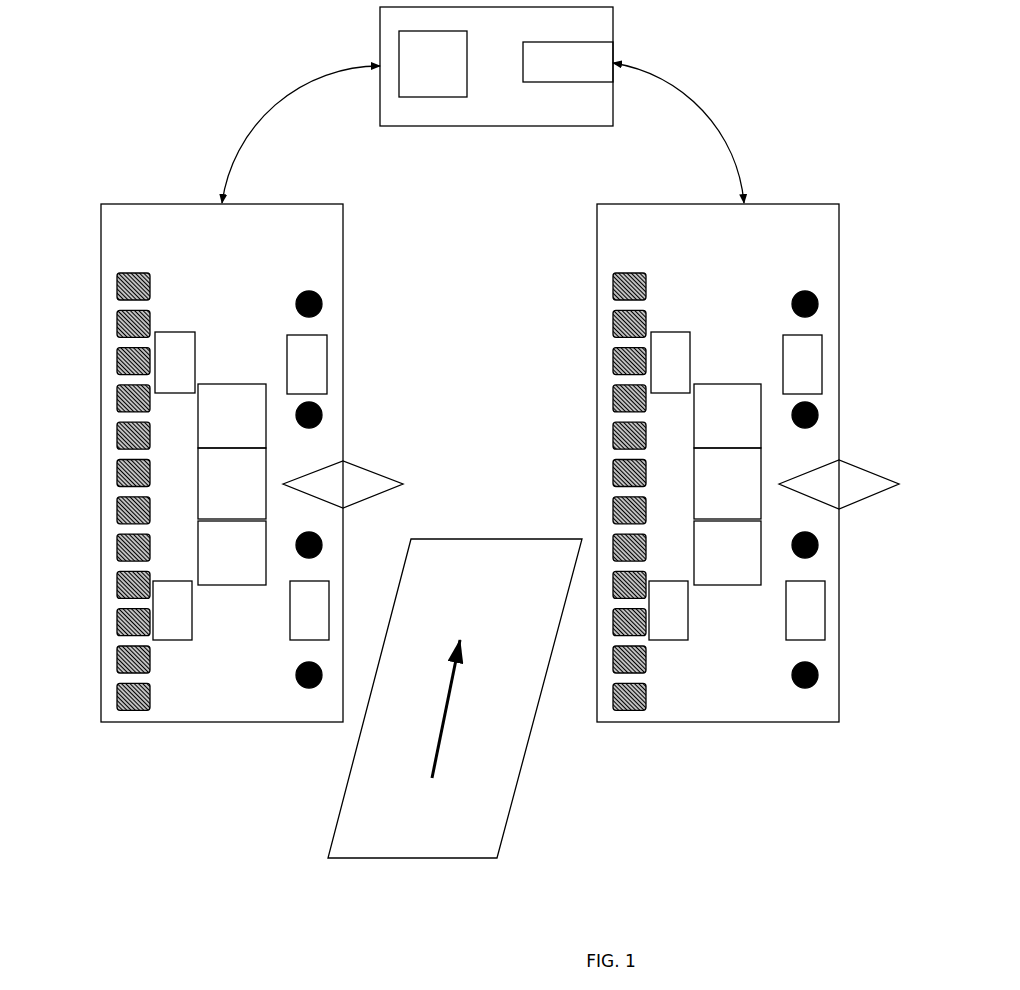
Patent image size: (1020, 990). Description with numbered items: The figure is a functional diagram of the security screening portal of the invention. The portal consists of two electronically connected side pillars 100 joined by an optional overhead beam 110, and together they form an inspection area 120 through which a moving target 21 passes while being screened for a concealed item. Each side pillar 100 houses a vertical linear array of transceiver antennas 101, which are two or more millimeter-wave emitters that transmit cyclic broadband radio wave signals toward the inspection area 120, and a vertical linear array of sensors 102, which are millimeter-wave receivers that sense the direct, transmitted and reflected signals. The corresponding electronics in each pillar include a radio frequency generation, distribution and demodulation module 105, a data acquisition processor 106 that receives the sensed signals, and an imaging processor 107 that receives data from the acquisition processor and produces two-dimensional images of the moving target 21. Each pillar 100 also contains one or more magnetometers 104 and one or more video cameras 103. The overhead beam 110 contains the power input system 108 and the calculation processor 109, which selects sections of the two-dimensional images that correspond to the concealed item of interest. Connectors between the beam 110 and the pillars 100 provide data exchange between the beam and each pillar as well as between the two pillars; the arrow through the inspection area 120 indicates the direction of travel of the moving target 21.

The side pillars 100 is at (351, 256).
The transceiver antennas 101 is at (152, 284).
The sensors 102 is at (297, 291).
The video cameras 103 is at (591, 484).
The magnetometers 104 is at (489, 486).
The radio frequency generation, distribution and demodulation module 105 is at (479, 416).
The data acquisition processor 106 is at (479, 483).
The imaging processor 107 is at (479, 553).
The power input system 108 is at (433, 64).
The calculation processor 109 is at (568, 62).
The overhead beam 110 is at (497, 128).
The inspection area 120 is at (455, 698).
The moving target 21 is at (453, 709).